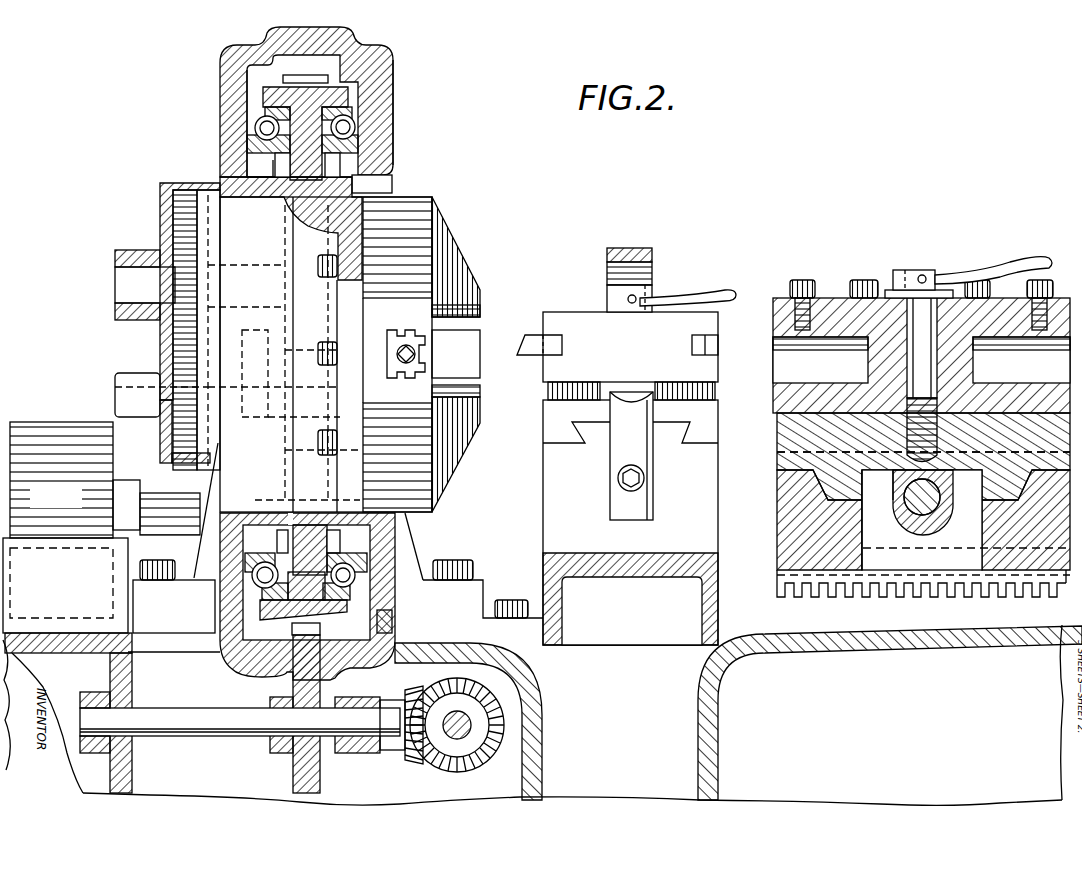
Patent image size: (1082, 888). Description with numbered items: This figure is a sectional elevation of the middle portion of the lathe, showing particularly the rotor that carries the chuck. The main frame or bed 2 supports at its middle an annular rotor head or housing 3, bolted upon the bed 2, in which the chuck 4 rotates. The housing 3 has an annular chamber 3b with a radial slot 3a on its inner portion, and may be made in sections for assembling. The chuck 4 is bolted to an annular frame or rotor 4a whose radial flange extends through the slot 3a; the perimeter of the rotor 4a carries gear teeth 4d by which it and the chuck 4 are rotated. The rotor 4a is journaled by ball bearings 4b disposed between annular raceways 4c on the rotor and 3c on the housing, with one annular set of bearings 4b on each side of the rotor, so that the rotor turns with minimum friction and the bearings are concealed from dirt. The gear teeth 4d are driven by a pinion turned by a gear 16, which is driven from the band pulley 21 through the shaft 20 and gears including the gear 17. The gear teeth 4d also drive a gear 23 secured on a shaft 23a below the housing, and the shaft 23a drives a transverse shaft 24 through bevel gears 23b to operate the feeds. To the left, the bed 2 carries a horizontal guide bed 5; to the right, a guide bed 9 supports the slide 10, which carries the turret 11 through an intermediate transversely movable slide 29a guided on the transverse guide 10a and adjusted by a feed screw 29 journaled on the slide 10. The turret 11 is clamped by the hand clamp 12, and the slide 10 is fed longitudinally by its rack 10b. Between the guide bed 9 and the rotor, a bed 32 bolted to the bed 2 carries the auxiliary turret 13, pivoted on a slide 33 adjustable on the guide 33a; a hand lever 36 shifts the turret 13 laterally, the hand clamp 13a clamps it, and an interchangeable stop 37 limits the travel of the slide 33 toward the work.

The main frame or bed 2 is at (572, 659).
The rotor head or housing 3 is at (220, 110).
The radial slot 3a is at (372, 184).
The annular chamber 3b is at (258, 80).
The annular raceway on the housing 3c is at (393, 150).
The chuck 4 is at (344, 354).
The annular frame or rotor 4a is at (300, 185).
The ball bearings 4b is at (349, 126).
The annular raceway on the rotor 4c is at (348, 118).
The gear teeth 4d is at (326, 74).
The horizontal guide bed 5 is at (68, 713).
The guide bed 9 is at (890, 713).
The slide 10 is at (1005, 558).
The transverse guide 10a is at (877, 520).
The rack 10b is at (920, 594).
The turret 11 is at (838, 300).
The hand clamp 12 is at (970, 263).
The auxiliary turret 13 is at (617, 342).
The hand clamp 13a is at (672, 294).
The gear 16 is at (180, 233).
The gear 17 is at (175, 440).
The shaft 20 is at (126, 512).
The band pulley 21 is at (65, 527).
The gear 23 is at (293, 688).
The shaft 23a is at (240, 722).
The bevel gears 23b is at (440, 760).
The transverse shaft 24 is at (457, 725).
The feed screw 29 is at (912, 505).
The transversely movable slide 29a is at (790, 452).
The bed 32 is at (630, 522).
The slide 33 is at (576, 423).
The guide 33a is at (664, 432).
The hand lever 36 is at (650, 250).
The stop 37 is at (631, 456).